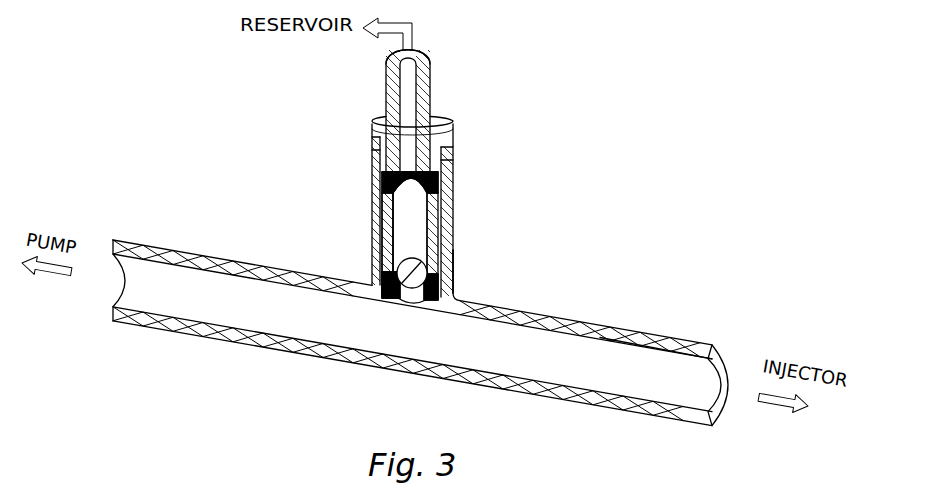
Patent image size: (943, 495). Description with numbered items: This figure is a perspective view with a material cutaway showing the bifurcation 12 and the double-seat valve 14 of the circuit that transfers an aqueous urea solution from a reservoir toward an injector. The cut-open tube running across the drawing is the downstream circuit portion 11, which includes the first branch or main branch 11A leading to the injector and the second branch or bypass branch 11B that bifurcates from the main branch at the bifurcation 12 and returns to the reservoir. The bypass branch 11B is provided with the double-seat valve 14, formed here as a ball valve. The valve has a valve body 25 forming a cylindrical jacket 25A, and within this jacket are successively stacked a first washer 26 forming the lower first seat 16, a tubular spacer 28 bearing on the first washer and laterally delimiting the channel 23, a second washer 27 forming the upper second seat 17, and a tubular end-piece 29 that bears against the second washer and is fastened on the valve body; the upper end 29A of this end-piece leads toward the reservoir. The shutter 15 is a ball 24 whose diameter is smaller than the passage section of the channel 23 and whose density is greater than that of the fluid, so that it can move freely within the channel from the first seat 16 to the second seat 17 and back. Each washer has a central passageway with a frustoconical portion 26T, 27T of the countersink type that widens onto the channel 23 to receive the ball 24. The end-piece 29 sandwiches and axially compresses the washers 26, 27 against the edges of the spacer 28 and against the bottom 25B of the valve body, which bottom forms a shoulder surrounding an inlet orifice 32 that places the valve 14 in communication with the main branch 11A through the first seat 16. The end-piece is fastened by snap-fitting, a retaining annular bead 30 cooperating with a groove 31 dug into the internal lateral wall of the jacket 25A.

The downstream circuit portion 11 is at (222, 318).
The first branch (main branch) 11A is at (653, 357).
The second branch (bypass branch) 11B is at (422, 97).
The bifurcation 12 is at (575, 263).
The double-seat valve 14 is at (465, 240).
The shutter 15 is at (453, 270).
The first seat 16 is at (453, 287).
The second seat 17 is at (437, 188).
The channel 23 is at (402, 223).
The ball 24 is at (453, 270).
The valve body 25 is at (450, 206).
The cylindrical jacket 25A is at (371, 238).
The bottom of the valve body 25B is at (388, 313).
The first washer 26 is at (453, 287).
The frustoconical portion of the first washer 26T is at (376, 292).
The second washer 27 is at (437, 188).
The frustoconical portion of the second washer 27T is at (401, 201).
The tubular spacer 28 is at (371, 182).
The tubular end-piece 29 is at (423, 124).
The end of the tubular end-piece 29A is at (386, 73).
The retaining bead 30 is at (370, 155).
The groove 31 is at (460, 159).
The inlet orifice 32 is at (407, 312).